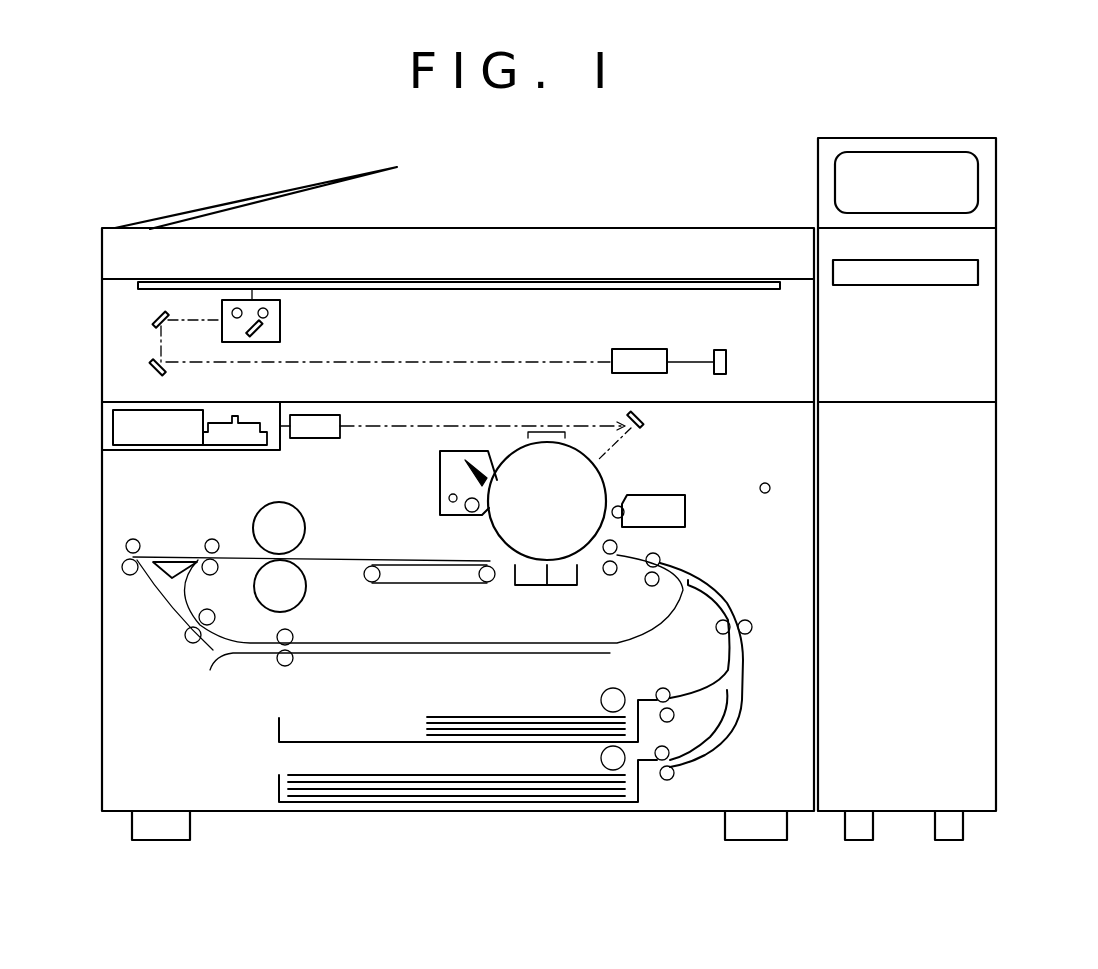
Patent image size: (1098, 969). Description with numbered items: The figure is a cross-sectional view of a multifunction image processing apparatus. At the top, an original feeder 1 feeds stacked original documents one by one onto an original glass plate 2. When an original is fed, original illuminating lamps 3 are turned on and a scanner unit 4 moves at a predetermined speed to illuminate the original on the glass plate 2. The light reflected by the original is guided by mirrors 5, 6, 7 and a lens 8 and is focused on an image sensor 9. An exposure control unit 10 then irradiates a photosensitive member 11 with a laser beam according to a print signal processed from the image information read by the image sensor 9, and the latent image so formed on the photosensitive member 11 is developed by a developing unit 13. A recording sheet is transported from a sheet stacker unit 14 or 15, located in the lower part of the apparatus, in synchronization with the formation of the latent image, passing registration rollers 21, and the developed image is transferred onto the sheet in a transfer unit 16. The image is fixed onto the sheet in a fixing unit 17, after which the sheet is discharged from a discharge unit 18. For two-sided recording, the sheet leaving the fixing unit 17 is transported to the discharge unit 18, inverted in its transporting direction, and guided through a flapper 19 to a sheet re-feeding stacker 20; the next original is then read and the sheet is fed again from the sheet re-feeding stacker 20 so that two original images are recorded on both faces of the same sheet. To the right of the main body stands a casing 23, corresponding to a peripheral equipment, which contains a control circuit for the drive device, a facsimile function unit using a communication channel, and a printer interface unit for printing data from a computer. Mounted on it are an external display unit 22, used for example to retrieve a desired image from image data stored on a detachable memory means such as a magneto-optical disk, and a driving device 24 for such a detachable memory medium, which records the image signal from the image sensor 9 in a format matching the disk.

The original feeder 1 is at (238, 195).
The original glass plate 2 is at (727, 281).
The original illuminating lamps 3 is at (266, 308).
The scanner unit 4 is at (280, 320).
The mirror 5 is at (262, 331).
The mirror 6 is at (153, 318).
The mirror 7 is at (152, 368).
The lens 8 is at (633, 349).
The image sensor 9 is at (727, 363).
The exposure control unit 10 is at (215, 420).
The photosensitive member 11 is at (592, 490).
The developing unit 13 is at (685, 507).
The sheet stacker unit 14 is at (638, 733).
The sheet stacker unit 15 is at (638, 790).
The transfer unit 16 is at (518, 586).
The fixing unit 17 is at (260, 510).
The discharge unit 18 is at (128, 538).
The flapper 19 is at (157, 540).
The sheet re-feeding stacker 20 is at (335, 652).
The registration rollers 21 is at (617, 547).
The external display unit 22 is at (963, 199).
The casing 23 is at (975, 540).
The driving device 24 is at (968, 275).